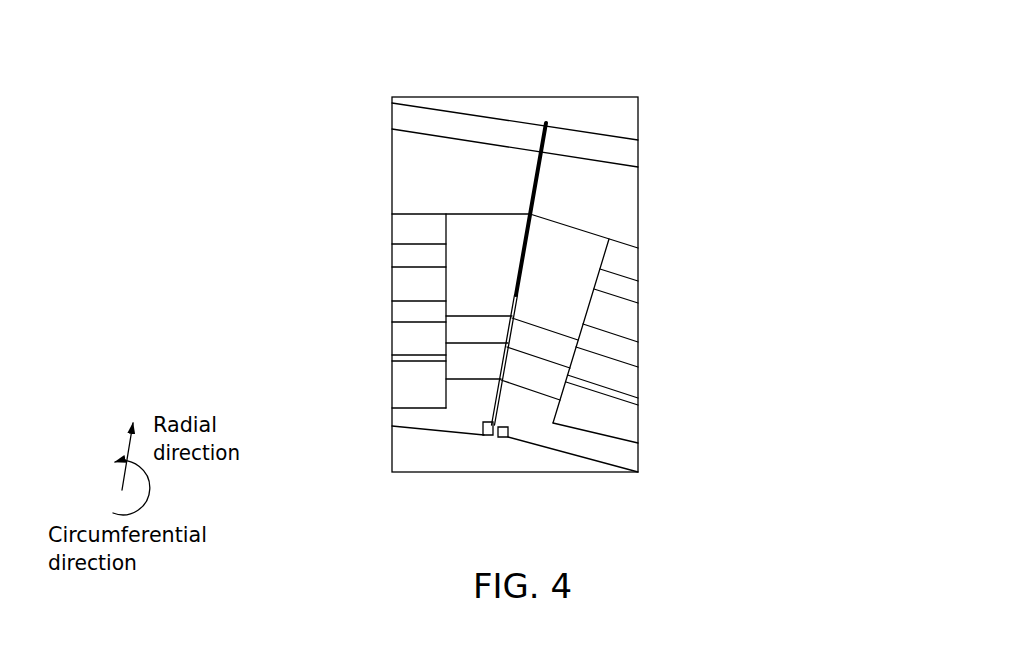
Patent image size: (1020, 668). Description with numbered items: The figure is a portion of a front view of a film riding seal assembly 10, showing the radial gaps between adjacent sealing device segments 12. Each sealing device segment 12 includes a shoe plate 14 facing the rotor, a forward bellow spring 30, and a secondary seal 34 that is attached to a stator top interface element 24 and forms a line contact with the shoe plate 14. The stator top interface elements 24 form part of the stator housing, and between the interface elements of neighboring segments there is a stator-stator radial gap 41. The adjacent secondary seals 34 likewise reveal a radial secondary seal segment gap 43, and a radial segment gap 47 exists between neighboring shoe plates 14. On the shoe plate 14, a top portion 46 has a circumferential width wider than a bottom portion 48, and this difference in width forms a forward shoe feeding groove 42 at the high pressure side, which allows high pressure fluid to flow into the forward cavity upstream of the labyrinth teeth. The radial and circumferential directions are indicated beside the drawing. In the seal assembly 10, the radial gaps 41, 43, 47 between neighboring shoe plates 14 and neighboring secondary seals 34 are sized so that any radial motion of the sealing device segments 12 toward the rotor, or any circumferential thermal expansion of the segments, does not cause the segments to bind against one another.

The seal assembly 10 is at (782, 53).
The sealing device segment 12 is at (368, 170).
The shoe plate 14 is at (342, 385).
The stator top interface element 24 is at (392, 115).
The forward bellow spring 30 is at (392, 255).
The secondary seal 34 is at (453, 365).
The stator-stator radial gap 41 is at (540, 181).
The forward shoe feeding groove 42 is at (487, 433).
The radial secondary seal segment gap 43 is at (515, 332).
The top portion 46 is at (453, 387).
The radial segment gap 47 is at (503, 428).
The bottom portion 48 is at (437, 416).